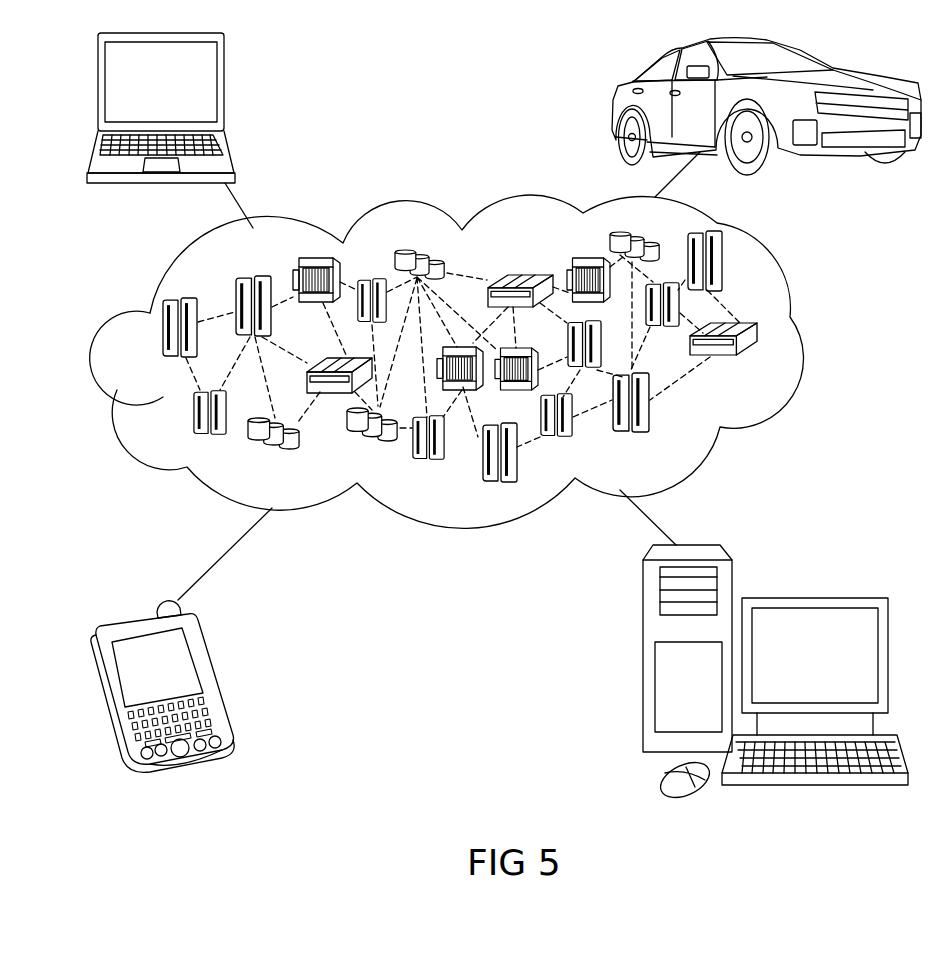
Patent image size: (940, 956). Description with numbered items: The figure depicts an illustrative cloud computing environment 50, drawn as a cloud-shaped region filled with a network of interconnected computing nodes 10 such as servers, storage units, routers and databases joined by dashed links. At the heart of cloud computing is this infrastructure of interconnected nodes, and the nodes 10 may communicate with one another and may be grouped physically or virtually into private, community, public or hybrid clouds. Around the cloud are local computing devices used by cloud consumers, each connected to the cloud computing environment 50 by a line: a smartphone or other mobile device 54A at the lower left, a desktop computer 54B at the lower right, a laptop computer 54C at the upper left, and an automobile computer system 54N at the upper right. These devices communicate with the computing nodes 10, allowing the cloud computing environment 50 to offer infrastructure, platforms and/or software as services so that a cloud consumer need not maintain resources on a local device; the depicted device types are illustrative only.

The computing node 10 is at (758, 367).
The cloud computing environment 50 is at (813, 341).
The smartphone or other mobile device 54A is at (215, 681).
The desktop computer 54B is at (812, 598).
The laptop computer 54C is at (224, 91).
The automobile computer system 54N is at (614, 107).